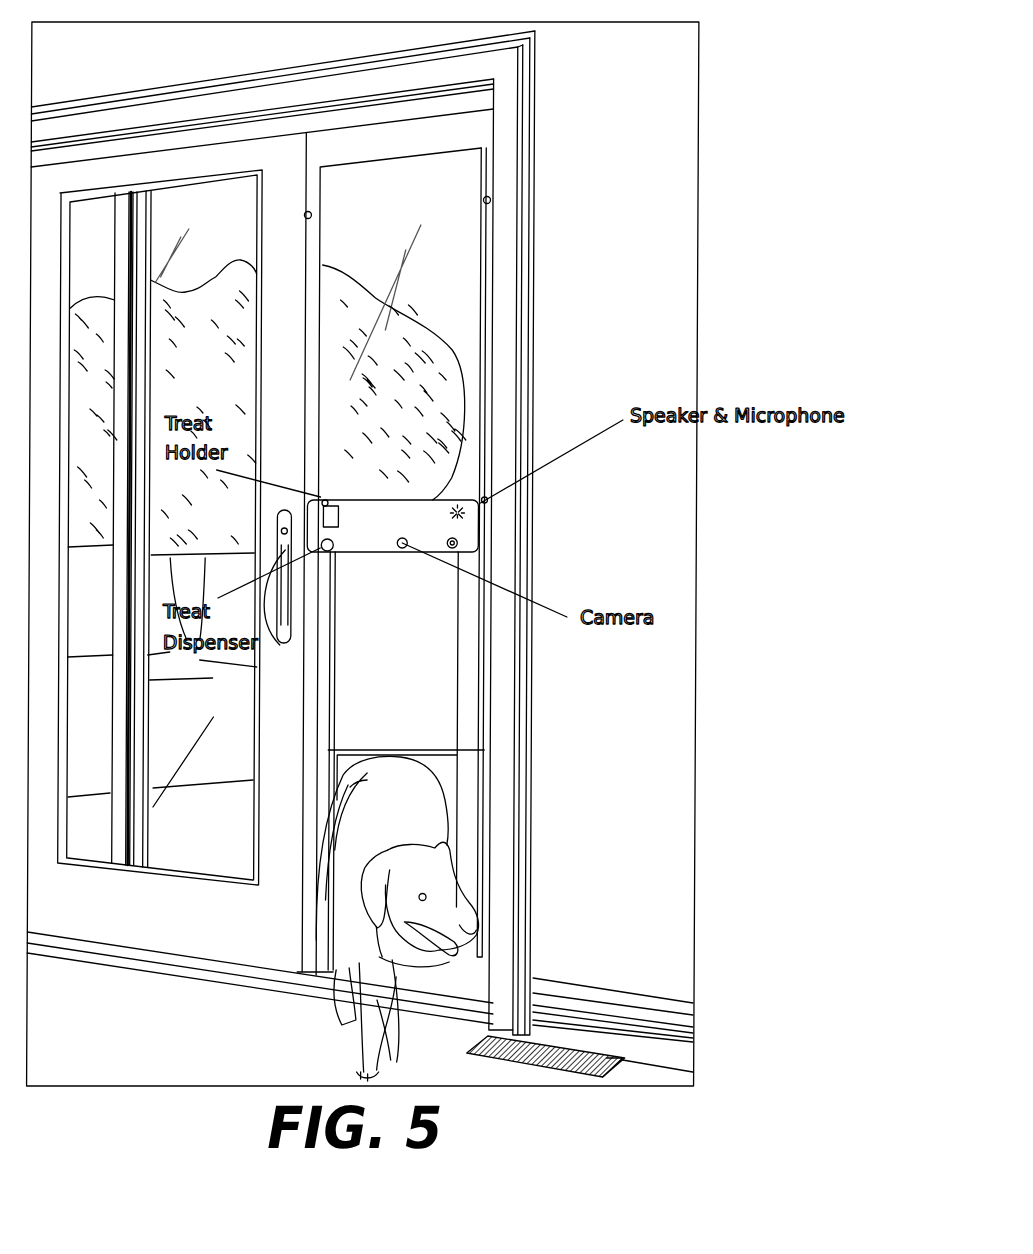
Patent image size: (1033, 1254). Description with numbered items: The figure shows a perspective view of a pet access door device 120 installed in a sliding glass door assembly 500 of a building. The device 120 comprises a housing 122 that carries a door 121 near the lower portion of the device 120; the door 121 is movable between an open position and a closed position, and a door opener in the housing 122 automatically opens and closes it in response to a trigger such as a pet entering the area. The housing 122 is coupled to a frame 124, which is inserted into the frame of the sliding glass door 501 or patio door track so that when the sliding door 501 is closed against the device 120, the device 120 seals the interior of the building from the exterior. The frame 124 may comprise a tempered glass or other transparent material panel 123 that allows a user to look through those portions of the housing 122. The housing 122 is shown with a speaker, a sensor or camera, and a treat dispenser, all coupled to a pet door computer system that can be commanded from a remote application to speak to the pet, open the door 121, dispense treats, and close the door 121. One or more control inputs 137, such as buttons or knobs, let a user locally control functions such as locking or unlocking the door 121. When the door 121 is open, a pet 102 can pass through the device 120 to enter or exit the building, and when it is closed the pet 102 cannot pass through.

The pet 102 is at (454, 913).
The pet access door device 120 is at (310, 468).
The door 121 is at (488, 750).
The housing 122 is at (456, 557).
The transparent material panel 123 is at (433, 240).
The frame 124 is at (485, 417).
The control input 137 is at (453, 550).
The sliding glass door assembly 500 is at (205, 987).
The sliding glass door 501 is at (158, 920).